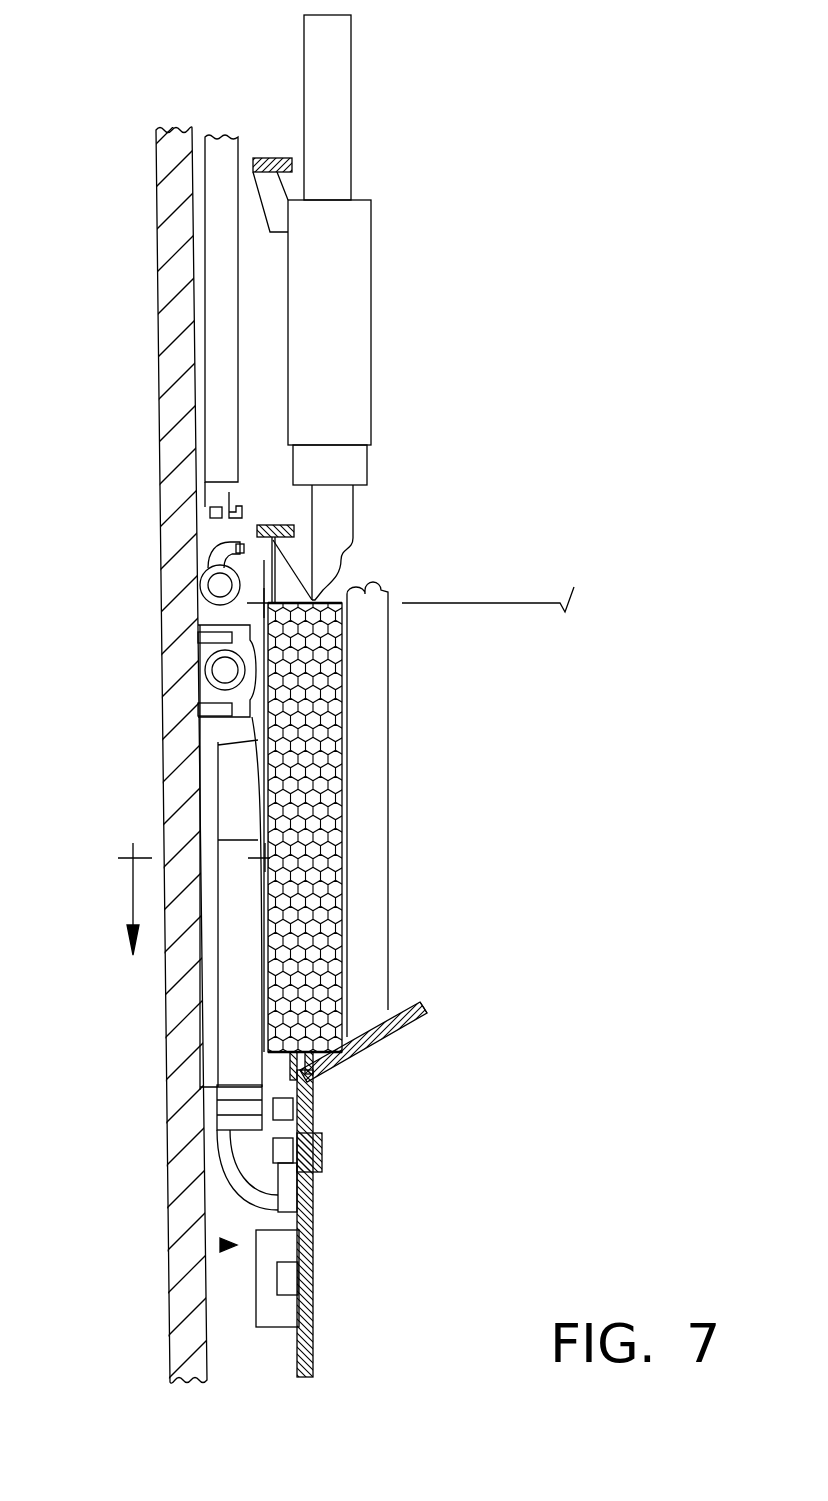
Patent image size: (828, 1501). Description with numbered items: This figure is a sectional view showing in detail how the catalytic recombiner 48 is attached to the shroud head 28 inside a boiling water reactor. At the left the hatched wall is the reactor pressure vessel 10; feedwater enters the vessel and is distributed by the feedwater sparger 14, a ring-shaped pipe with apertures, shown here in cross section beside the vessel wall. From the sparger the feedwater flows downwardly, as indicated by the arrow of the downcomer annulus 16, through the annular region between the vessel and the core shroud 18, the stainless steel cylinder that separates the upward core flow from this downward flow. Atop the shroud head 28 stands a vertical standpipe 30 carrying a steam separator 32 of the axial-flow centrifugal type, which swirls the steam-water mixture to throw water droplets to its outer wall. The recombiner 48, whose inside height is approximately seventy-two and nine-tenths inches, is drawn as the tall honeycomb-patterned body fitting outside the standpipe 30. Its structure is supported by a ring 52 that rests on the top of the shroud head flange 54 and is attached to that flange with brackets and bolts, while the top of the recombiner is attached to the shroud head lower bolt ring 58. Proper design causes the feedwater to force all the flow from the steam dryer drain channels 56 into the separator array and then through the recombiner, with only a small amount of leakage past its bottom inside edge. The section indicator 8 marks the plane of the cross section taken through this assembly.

The section line 8- 8 is at (135, 880).
The reactor pressure vessel 10 is at (164, 1020).
The feedwater sparger 14 is at (213, 588).
The downcomer annulus 16 is at (222, 1245).
The core shroud 18 is at (303, 1290).
The shroud head 28 is at (400, 1025).
The standpipe 30 is at (353, 538).
The steam separator 32 is at (371, 288).
The recombiner 48 is at (335, 678).
The ring 52 is at (330, 1068).
The shroud head flange 54 is at (312, 1115).
The steam dryer drain channels 56 is at (210, 512).
The shroud head lower bolt ring 58 is at (262, 527).